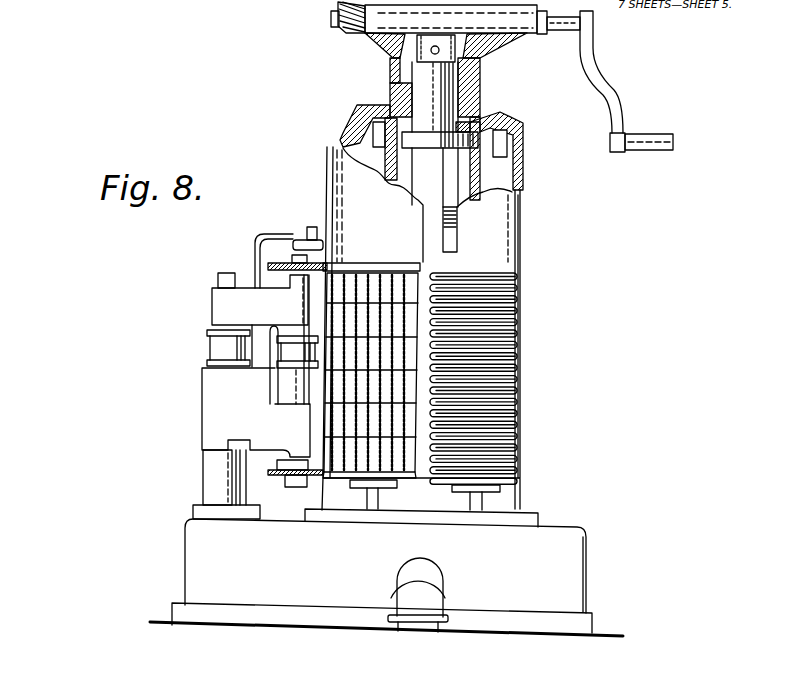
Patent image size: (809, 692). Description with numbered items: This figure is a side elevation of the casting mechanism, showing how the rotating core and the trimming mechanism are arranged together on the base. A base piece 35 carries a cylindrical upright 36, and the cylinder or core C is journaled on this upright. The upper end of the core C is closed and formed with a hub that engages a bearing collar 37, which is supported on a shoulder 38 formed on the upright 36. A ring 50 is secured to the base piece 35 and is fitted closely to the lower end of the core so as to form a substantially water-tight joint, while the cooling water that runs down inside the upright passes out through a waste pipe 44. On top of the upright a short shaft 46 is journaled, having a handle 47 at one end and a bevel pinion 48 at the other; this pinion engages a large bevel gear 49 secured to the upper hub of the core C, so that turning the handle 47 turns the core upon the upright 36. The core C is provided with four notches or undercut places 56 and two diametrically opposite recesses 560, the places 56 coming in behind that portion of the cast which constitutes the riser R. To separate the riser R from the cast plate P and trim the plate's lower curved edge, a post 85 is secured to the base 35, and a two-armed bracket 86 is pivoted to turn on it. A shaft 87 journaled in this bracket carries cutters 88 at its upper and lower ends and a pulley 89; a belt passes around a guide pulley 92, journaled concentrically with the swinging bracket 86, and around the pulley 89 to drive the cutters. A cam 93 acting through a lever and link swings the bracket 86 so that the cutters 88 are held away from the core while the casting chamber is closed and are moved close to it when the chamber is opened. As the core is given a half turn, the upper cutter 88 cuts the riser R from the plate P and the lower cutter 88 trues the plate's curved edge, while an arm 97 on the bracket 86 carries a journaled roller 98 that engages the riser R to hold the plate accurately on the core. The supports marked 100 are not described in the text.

The base piece 35 is at (578, 575).
The cylindrical upright 36 is at (440, 168).
The bearing collar 37 is at (482, 122).
The shoulder 38 is at (470, 137).
The waste pipe 44 is at (412, 626).
The short shaft 46 is at (560, 38).
The handle 47 is at (646, 136).
The bevel pinion 48 is at (336, 13).
The bevel gear 49 is at (372, 40).
The ring 50 is at (528, 519).
The notches or undercut places 56 is at (443, 232).
The recesses 560 is at (354, 128).
The post 85 is at (212, 476).
The two-armed bracket 86 is at (202, 412).
The shaft 87 is at (297, 388).
The cutters 88 is at (281, 269).
The pulley 89 is at (290, 355).
The guide pulley 92 is at (220, 349).
The cam 93 is at (386, 160).
The arm 97 is at (255, 246).
The roller 98 is at (330, 266).
The support foot 100 is at (352, 490).
The riser R is at (340, 196).
The plate P is at (410, 410).
The cylinder or core C is at (523, 262).